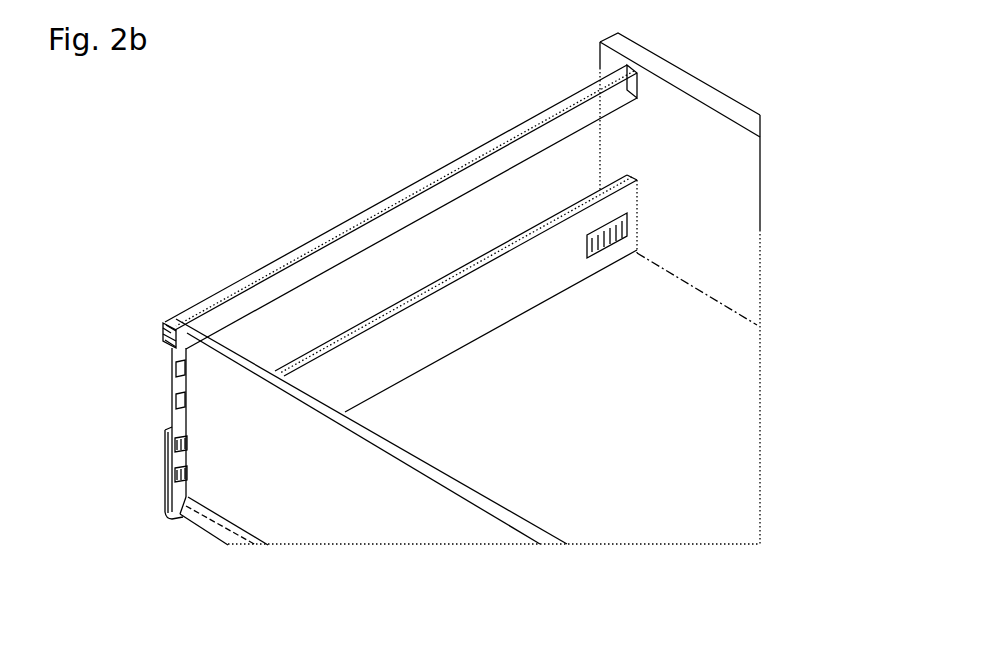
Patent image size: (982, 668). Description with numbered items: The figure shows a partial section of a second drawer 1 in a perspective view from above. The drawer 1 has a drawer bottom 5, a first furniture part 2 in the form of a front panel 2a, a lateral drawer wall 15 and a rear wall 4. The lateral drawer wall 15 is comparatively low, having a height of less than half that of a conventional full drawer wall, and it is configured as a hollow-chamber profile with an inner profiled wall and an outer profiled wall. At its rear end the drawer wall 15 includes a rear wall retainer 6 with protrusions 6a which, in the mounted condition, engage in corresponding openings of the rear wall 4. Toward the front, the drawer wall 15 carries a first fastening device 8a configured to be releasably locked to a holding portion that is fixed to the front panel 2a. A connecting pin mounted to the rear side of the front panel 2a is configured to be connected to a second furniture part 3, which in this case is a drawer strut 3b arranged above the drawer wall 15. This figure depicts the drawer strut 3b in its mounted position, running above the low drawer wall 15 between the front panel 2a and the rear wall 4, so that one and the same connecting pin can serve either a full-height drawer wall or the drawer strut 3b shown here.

The drawer 1 is at (725, 66).
The first furniture part 2 is at (738, 293).
The front panel 2a is at (740, 185).
The second furniture part 3 is at (400, 207).
The drawer strut 3b is at (320, 237).
The rear wall 4 is at (312, 517).
The drawer bottom 5 is at (411, 303).
The rear wall retainer 6 is at (191, 446).
The protrusions 6a is at (188, 445).
The first fastening device 8a is at (605, 238).
The lateral drawer wall 15 is at (343, 333).